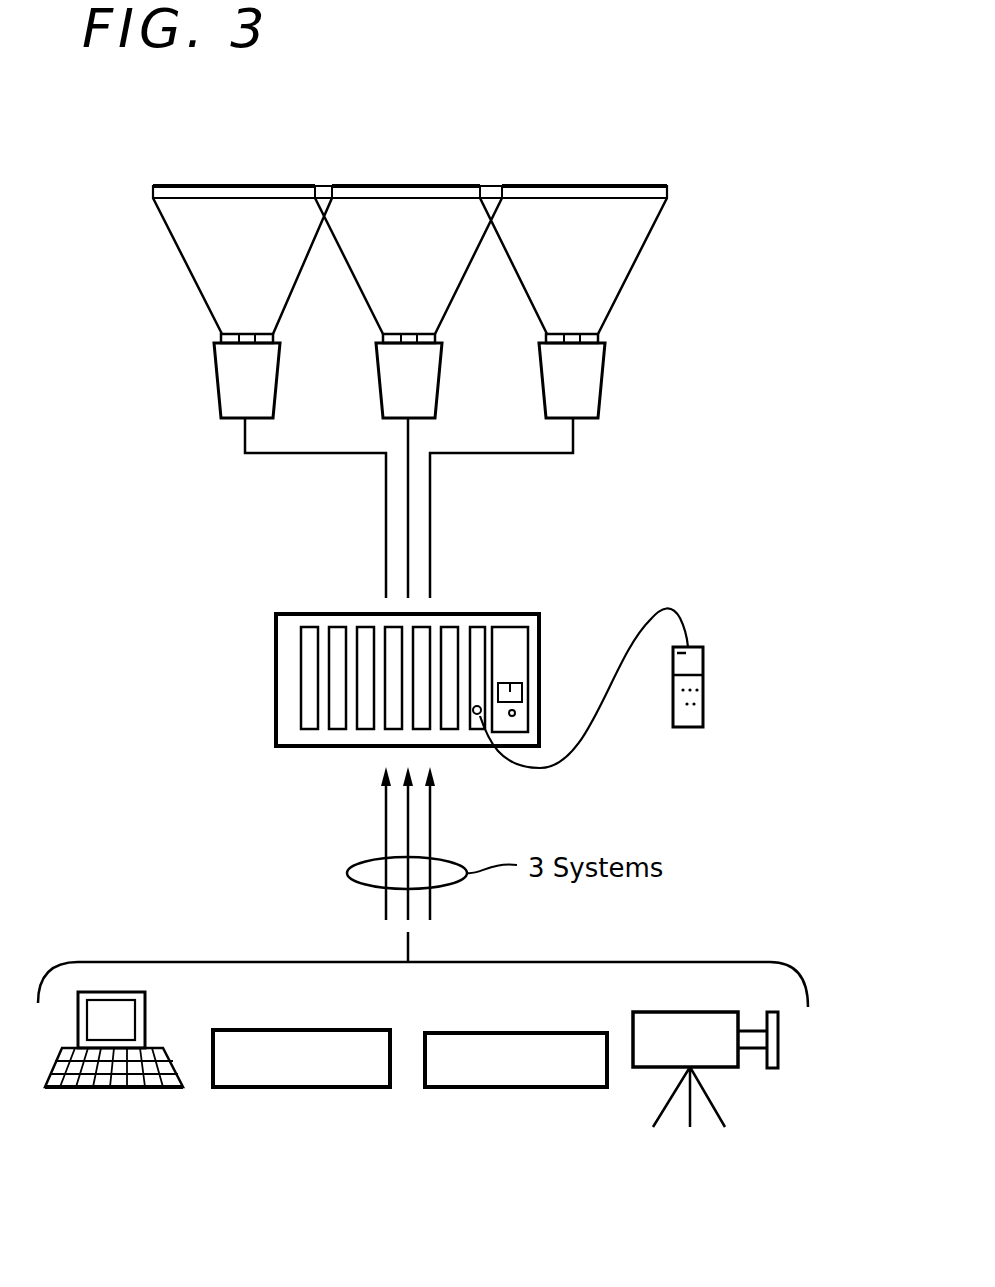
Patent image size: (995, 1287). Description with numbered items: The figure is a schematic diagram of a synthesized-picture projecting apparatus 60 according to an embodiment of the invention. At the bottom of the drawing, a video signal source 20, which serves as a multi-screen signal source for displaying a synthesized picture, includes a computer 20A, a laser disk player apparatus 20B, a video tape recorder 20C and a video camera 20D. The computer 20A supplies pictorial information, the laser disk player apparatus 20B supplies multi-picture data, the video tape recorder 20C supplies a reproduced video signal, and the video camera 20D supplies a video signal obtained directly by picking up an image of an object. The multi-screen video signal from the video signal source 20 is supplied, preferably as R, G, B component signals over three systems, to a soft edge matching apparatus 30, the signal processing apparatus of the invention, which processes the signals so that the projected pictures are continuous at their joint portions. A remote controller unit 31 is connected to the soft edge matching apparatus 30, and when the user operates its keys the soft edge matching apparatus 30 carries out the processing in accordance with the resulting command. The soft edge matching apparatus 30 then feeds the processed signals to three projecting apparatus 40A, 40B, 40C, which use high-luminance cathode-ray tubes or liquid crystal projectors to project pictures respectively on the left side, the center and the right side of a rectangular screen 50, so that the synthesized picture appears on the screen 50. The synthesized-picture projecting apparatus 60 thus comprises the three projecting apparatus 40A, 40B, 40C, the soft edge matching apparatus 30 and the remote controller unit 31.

The screen 50 is at (645, 188).
The projecting apparatus 40A is at (220, 403).
The projecting apparatus 40B is at (440, 405).
The projecting apparatus 40C is at (604, 405).
The synthesized-picture projecting apparatus 60 is at (165, 560).
The soft edge matching apparatus 30 is at (276, 716).
The remote controller unit 31 is at (703, 698).
The video signal source 20 is at (772, 962).
The computer 20A is at (100, 1087).
The laser disk player apparatus 20B is at (257, 1030).
The video tape recorder 20C is at (468, 1033).
The video camera 20D is at (732, 1067).